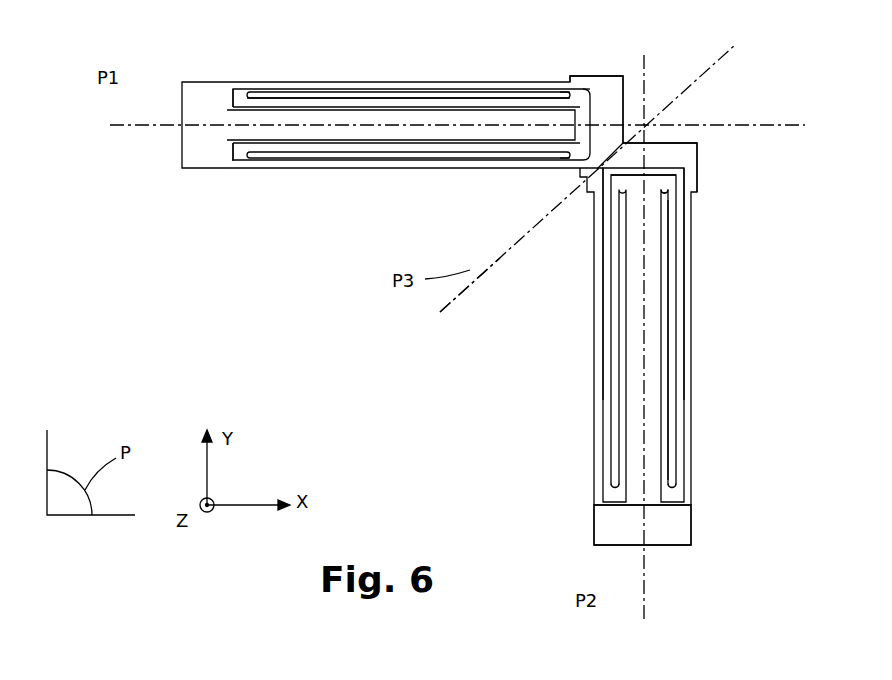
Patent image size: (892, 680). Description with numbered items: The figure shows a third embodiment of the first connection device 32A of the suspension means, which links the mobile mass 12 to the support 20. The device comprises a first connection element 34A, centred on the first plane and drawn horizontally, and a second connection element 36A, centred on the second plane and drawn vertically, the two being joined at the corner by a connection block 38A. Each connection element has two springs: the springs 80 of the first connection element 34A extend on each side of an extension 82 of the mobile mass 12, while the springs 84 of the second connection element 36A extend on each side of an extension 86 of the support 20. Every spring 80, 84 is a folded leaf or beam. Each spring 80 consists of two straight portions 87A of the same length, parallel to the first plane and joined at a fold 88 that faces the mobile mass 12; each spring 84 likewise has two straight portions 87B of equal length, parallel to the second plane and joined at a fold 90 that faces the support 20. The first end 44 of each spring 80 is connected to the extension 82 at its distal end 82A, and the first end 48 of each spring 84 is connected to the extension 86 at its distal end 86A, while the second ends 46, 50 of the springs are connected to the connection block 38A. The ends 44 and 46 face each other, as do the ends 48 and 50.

The mobile mass 12 is at (210, 160).
The support 20 is at (668, 522).
The first connection device 32A is at (412, 385).
The first connection element 34A is at (300, 76).
The second connection element 36A is at (698, 373).
The connection block 38A is at (699, 160).
The first end of spring 44 is at (578, 105).
The second end of spring 46 is at (560, 80).
The first end of spring 48 is at (668, 200).
The second end of spring 50 is at (700, 208).
The spring 80 is at (407, 98).
The extension of the mobile mass 82 is at (332, 150).
The distal end of extension 82A is at (608, 110).
The spring 84 is at (690, 285).
The extension of the support 86 is at (635, 413).
The distal end of extension 86A is at (655, 195).
The straight portions 87A is at (468, 96).
The straight portions 87B is at (682, 412).
The fold 88 is at (240, 92).
The fold 90 is at (614, 487).